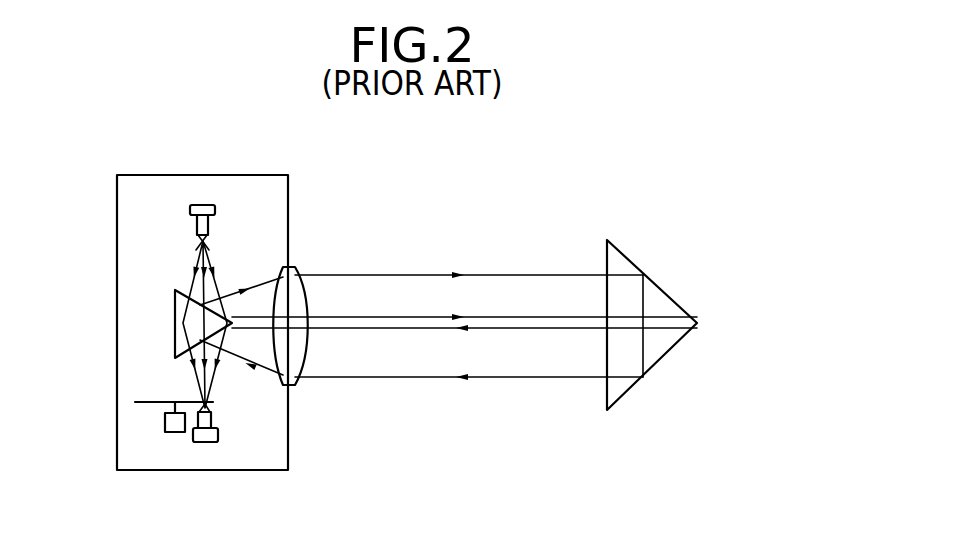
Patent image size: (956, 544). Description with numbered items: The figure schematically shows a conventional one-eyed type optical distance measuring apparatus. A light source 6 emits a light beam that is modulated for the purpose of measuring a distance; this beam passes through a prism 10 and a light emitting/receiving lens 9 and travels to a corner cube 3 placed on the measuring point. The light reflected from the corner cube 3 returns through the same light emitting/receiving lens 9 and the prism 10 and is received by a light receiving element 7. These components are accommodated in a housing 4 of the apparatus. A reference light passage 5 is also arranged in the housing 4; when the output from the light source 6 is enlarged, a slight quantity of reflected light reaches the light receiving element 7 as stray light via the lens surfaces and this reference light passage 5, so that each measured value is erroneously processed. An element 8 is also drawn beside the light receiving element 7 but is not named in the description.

The corner cube 3 is at (652, 372).
The housing 4 is at (255, 470).
The reference light passage 5 is at (190, 268).
The light source 6 is at (190, 210).
The light receiving element 7 is at (203, 442).
The reference element 8 is at (165, 422).
The light emitting/receiving lens 9 is at (292, 267).
The prism 10 is at (175, 326).